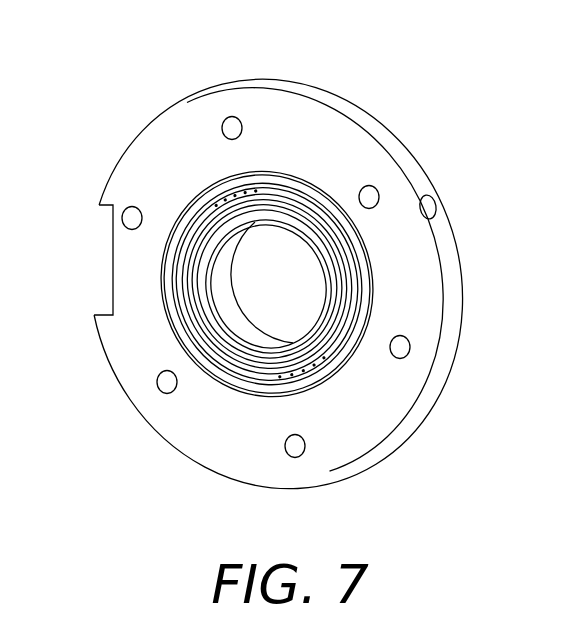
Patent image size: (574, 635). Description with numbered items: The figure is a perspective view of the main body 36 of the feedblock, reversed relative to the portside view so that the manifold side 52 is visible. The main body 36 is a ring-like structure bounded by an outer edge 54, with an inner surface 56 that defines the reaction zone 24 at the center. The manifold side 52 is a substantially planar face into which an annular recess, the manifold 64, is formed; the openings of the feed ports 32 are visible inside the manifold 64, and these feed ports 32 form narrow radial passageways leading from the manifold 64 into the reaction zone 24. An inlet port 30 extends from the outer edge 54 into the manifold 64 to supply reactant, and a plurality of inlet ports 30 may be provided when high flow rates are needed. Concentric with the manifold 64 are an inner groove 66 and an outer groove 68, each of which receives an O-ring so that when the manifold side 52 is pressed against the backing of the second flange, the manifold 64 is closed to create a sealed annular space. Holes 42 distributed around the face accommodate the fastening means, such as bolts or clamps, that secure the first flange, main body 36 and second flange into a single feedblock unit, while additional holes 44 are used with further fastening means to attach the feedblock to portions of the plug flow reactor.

The reaction zone 24 is at (267, 319).
The inlet port 30 is at (430, 203).
The feed ports 32 is at (245, 285).
The main body 36 is at (286, 283).
The holes 42 is at (125, 219).
The holes 44 is at (162, 380).
The manifold side 52 is at (408, 273).
The outer edge 54 is at (448, 347).
The inner surface 56 is at (222, 299).
The manifold 64 is at (232, 380).
The inner groove 66 is at (265, 210).
The outer groove 68 is at (213, 183).